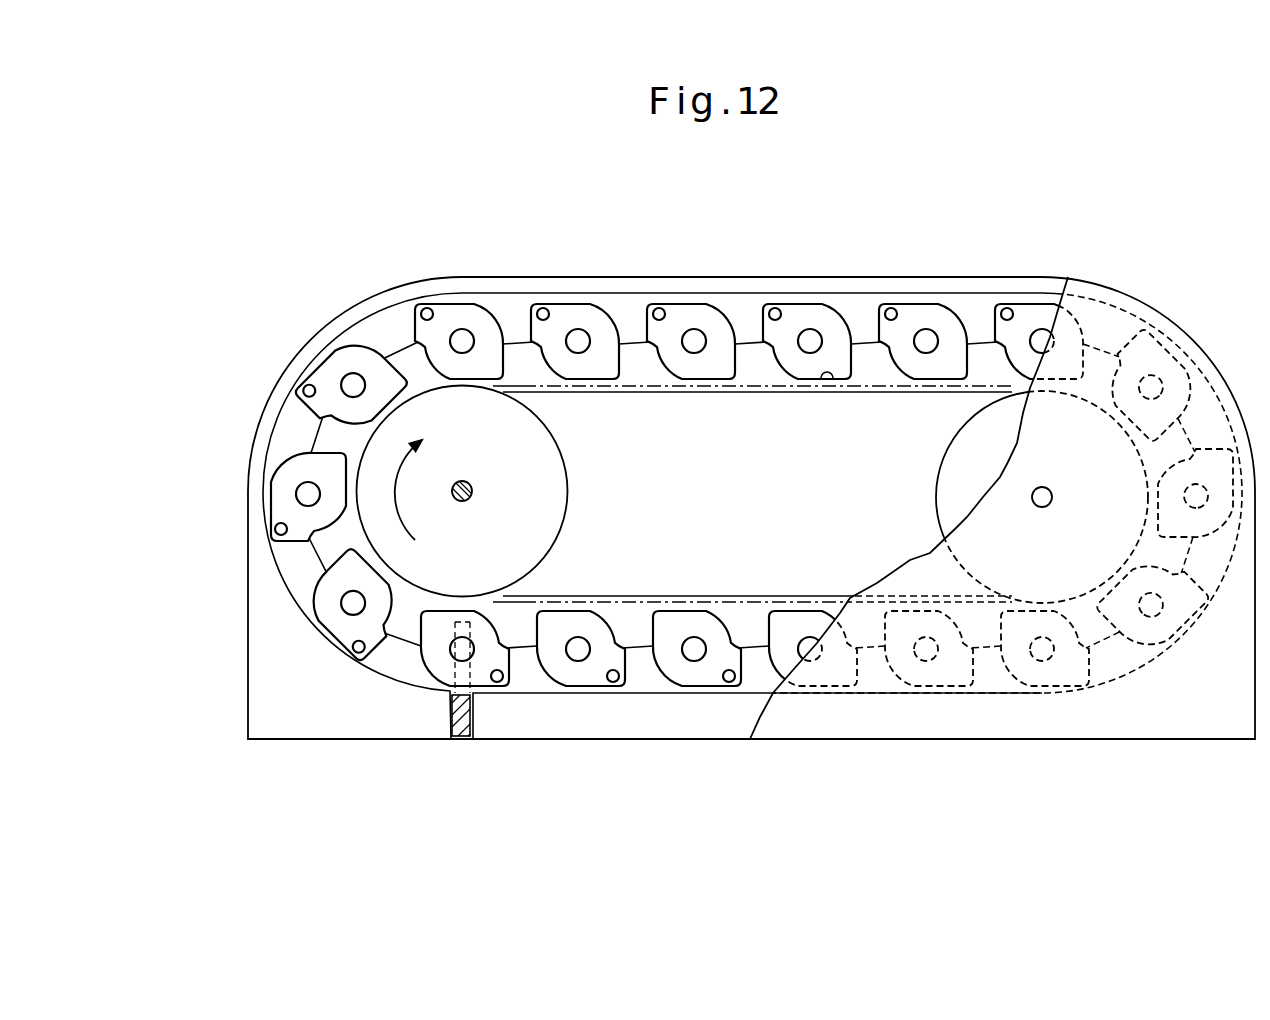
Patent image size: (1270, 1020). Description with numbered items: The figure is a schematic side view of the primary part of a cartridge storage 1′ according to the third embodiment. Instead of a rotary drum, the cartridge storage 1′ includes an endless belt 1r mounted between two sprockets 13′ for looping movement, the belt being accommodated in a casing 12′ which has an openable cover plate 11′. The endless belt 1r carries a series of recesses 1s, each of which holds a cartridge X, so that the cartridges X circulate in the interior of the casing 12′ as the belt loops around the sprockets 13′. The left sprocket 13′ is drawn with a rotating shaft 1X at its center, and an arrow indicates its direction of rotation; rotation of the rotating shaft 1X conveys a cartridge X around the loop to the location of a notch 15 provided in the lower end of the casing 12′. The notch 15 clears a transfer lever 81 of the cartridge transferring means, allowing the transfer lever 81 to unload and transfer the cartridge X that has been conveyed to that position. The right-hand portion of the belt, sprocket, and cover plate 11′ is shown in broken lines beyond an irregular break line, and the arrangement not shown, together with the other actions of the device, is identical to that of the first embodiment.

The cartridge storage 1′ is at (707, 455).
The casing 12′ is at (903, 204).
The cover plate 11′ is at (1103, 310).
The sprocket 13′ is at (753, 495).
The endless belt 1r is at (768, 378).
The recess 1s is at (827, 375).
The rotating shaft 1X is at (467, 483).
The cartridge X is at (330, 588).
The transfer lever 81 is at (452, 707).
The notch 15 is at (462, 739).